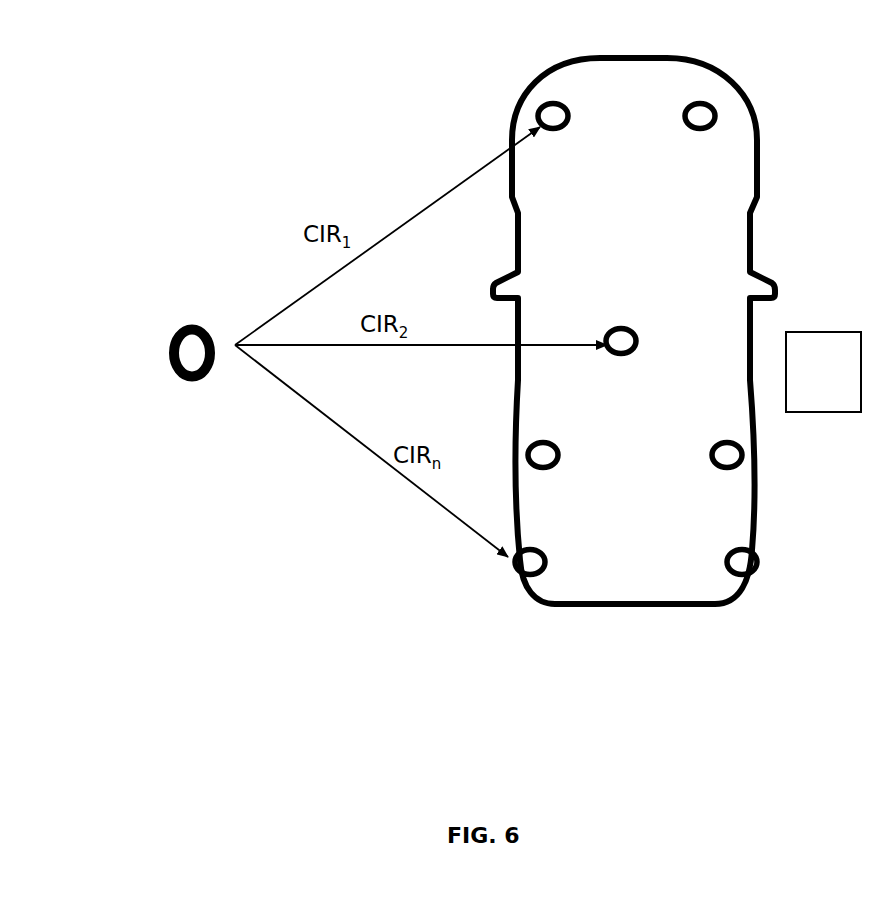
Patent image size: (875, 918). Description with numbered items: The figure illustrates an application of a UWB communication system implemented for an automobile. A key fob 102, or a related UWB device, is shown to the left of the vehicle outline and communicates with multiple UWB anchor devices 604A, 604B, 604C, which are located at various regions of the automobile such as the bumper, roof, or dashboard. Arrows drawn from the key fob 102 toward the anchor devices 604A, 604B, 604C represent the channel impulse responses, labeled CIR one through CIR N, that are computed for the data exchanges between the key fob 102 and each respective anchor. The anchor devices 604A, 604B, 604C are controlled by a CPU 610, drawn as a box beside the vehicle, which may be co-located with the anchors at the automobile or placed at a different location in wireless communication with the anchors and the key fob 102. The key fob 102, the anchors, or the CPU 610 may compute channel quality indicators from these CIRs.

The key fob 102 is at (168, 337).
The UWB anchor device 604A is at (545, 103).
The UWB anchor device 604B is at (617, 332).
The UWB anchor device 604C is at (518, 577).
The CPU 610 is at (843, 398).